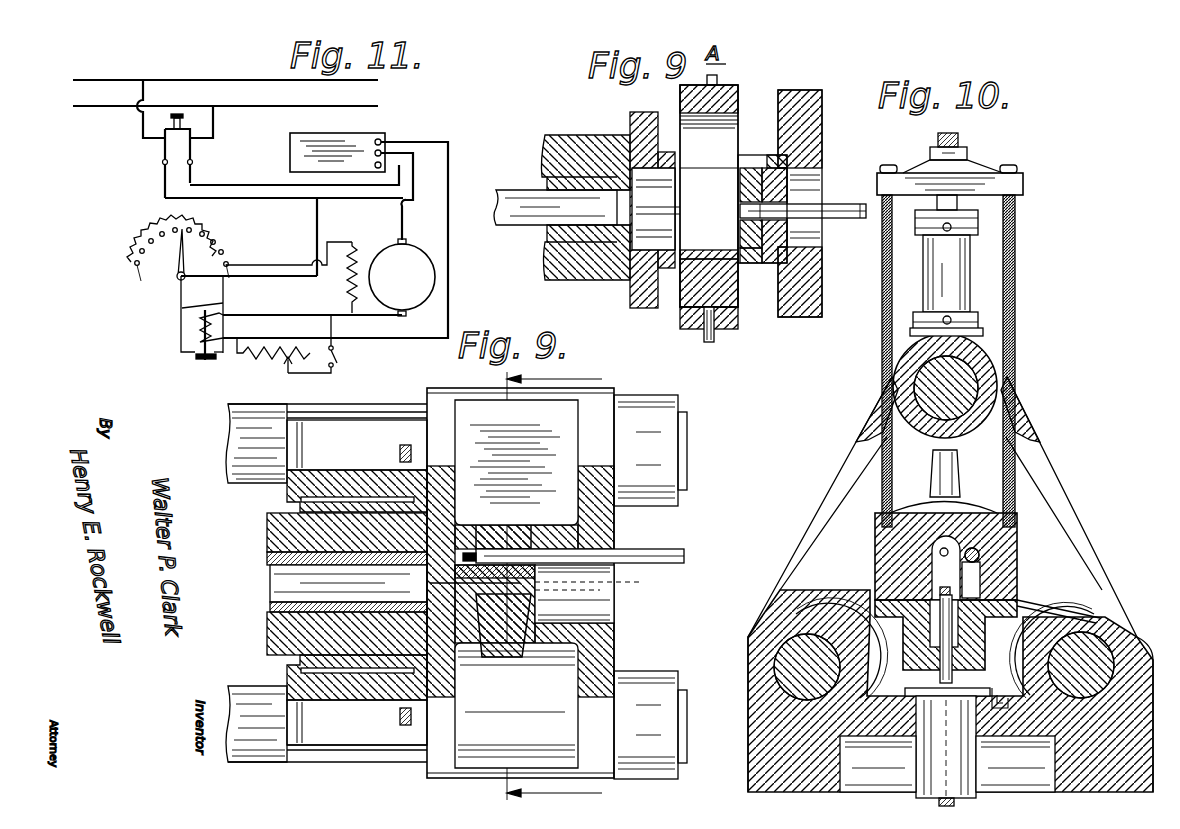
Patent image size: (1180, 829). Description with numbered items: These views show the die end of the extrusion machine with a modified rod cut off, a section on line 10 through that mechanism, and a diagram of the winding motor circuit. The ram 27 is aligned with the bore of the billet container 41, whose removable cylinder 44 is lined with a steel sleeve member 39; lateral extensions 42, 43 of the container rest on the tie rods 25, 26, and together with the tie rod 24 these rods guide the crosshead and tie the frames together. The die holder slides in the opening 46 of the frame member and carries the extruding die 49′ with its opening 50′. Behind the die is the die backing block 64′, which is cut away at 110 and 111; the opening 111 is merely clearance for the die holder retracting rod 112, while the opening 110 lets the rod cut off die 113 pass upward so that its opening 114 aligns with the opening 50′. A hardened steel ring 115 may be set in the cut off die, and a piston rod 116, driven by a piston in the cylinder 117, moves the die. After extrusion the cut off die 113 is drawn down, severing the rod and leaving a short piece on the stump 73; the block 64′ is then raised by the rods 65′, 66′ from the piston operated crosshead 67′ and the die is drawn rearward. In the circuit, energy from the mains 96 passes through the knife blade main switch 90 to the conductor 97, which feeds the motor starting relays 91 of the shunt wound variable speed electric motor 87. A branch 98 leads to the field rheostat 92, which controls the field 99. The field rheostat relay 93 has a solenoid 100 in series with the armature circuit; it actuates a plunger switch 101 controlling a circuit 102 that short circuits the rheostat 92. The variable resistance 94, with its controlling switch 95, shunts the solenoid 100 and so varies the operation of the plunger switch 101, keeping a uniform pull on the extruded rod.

In FIG. 11, the mains 96 is at (70, 104).
In FIG. 11, the knife blade main switch 90 is at (192, 156).
In FIG. 11, the conductor 97 is at (165, 198).
In FIG. 11, the motor starting relays 91 is at (371, 140).
In FIG. 11, the branch 98 is at (317, 230).
In FIG. 11, the field rheostat 92 is at (170, 262).
In FIG. 11, the shunt wound variable speed electric motor 87 is at (385, 258).
In FIG. 11, the field 99 is at (348, 286).
In FIG. 11, the circuit 102 is at (202, 314).
In FIG. 11, the solenoid 100 is at (205, 325).
In FIG. 11, the field rheostat relay 93 is at (164, 359).
In FIG. 11, the plunger switch 101 is at (206, 360).
In FIG. 11, the variable resistance 94 is at (284, 362).
In FIG. 11, the controlling switch 95 is at (337, 356).
In FIG. 9A, the stump 73 is at (635, 215).
In FIG. 9A, the ram 27 is at (512, 200).
In FIG. 9A, the opening 46 is at (640, 242).
In FIG. 9A, the die backing block 64′ is at (740, 95).
In FIG. 9, the die backing block 64′ is at (535, 522).
In FIG. 10, the die backing block 64′ is at (910, 528).
In FIG. 9A, the opening 50′ is at (762, 180).
In FIG. 9, the opening 50′ is at (400, 609).
In FIG. 9A, the opening 110 is at (709, 157).
In FIG. 10, the opening 110 is at (930, 562).
In FIG. 9A, the opening 114 is at (712, 256).
In FIG. 9, the opening 114 is at (528, 657).
In FIG. 10, the opening 114 is at (946, 549).
In FIG. 9A, the die holder retracting rod 112 is at (848, 214).
In FIG. 9, the die holder retracting rod 112 is at (664, 556).
In FIG. 10, the die holder retracting rod 112 is at (979, 553).
In FIG. 9A, the extruding die 49′ is at (752, 264).
In FIG. 9, the extruding die 49′ is at (410, 570).
In FIG. 9A, the rod cut off die 113 is at (690, 292).
In FIG. 9, the rod cut off die 113 is at (620, 599).
In FIG. 10, the rod cut off die 113 is at (930, 590).
In FIG. 9, the section line 10 is at (568, 589).
In FIG. 9, the lateral extension 42 is at (335, 435).
In FIG. 9, the tie rod 26 is at (242, 453).
In FIG. 10, the tie rod 26 is at (790, 675).
In FIG. 9, the billet container 41 is at (298, 484).
In FIG. 9, the removable cylinder 44 is at (277, 530).
In FIG. 9, the sleeve member 39 is at (277, 556).
In FIG. 9, the tie rod 25 is at (260, 718).
In FIG. 10, the tie rod 25 is at (1100, 675).
In FIG. 9, the lateral extension 43 is at (345, 725).
In FIG. 9, the hardened steel ring 115 is at (487, 652).
In FIG. 10, the piston operated crosshead 67′ is at (980, 172).
In FIG. 10, the rod 66′ is at (885, 276).
In FIG. 10, the rod 65′ is at (1015, 283).
In FIG. 10, the tie rod 24 is at (973, 383).
In FIG. 10, the opening 111 is at (972, 585).
In FIG. 10, the piston rod 116 is at (945, 642).
In FIG. 10, the cylinder 117 is at (932, 764).